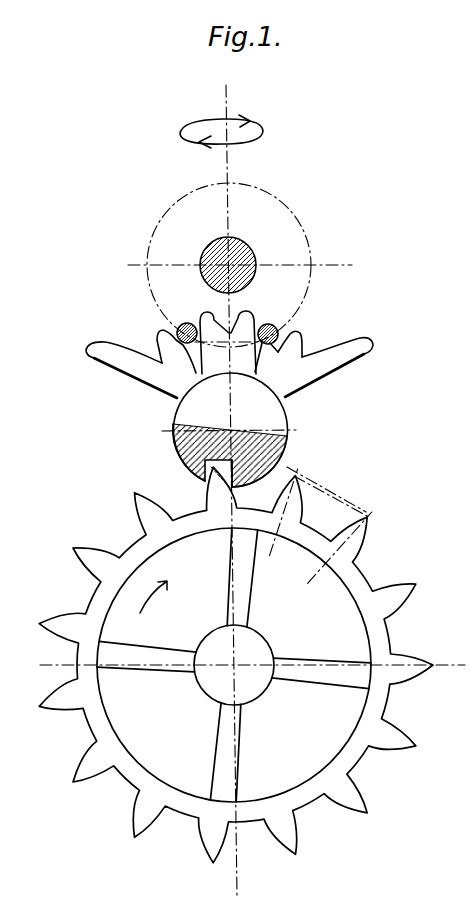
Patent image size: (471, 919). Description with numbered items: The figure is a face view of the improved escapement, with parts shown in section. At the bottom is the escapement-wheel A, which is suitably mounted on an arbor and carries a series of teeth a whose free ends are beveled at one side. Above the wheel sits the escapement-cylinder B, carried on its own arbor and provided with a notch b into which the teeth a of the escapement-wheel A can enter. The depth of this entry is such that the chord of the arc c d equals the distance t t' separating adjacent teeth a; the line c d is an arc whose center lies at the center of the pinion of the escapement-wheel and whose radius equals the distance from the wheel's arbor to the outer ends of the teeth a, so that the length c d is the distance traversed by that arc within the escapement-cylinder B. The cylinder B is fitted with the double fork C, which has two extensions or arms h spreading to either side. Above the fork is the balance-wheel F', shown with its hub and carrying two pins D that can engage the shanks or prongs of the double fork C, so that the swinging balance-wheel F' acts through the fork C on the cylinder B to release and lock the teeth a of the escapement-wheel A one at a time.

The escapement-wheel A is at (234, 665).
The teeth a is at (236, 665).
The escapement-cylinder B is at (280, 417).
The notch b is at (233, 462).
The end of arc c is at (193, 472).
The end of arc d is at (259, 464).
The double fork C is at (229, 342).
The extensions or arms h is at (229, 368).
The pins D is at (227, 325).
The balance-wheel F' is at (239, 263).
The tooth separation point t is at (287, 501).
The tooth separation point t' is at (334, 525).